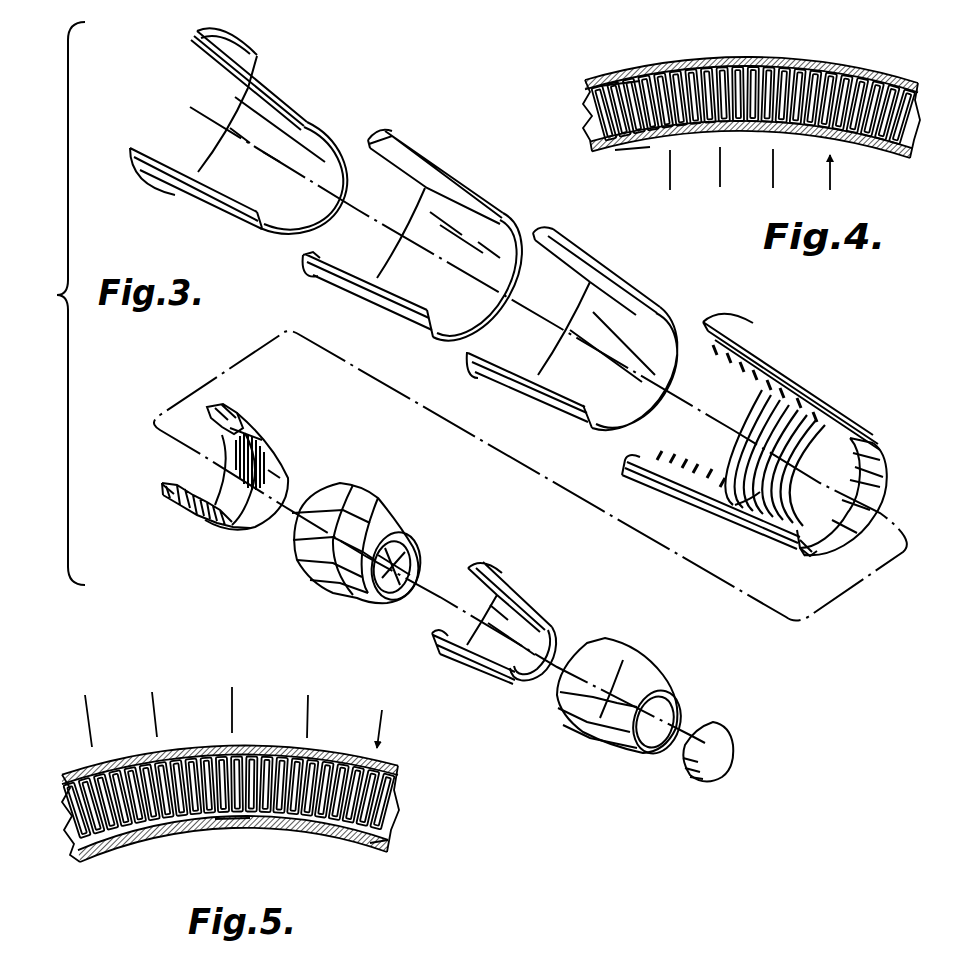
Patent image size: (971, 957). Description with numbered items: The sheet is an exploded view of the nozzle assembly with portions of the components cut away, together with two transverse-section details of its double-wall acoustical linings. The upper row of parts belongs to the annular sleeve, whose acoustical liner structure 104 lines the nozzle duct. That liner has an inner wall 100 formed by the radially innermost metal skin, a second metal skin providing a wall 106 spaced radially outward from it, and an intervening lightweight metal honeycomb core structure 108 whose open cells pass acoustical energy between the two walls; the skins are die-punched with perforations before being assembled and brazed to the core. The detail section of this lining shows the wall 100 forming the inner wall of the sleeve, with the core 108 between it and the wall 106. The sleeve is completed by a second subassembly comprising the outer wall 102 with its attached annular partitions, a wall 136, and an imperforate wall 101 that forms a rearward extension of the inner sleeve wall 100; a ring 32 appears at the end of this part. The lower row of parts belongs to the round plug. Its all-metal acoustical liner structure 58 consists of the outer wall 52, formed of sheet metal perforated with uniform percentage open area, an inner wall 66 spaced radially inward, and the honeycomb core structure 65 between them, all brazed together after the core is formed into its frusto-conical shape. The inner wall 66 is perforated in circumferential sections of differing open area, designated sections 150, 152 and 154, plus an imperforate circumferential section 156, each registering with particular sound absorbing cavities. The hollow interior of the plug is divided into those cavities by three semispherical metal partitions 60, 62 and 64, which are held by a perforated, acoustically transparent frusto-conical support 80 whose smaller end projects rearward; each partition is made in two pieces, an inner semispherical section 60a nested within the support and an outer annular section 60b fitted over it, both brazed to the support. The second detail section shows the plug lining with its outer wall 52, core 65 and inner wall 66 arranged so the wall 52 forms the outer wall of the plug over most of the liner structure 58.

In FIG. 3, the ring 32 is at (898, 464).
In FIG. 3, the outer wall 52 is at (594, 733).
In FIG. 5, the outer wall 52 is at (330, 758).
In FIG. 3, the acoustical liner structure 58 is at (723, 740).
In FIG. 5, the acoustical liner structure 58 is at (227, 791).
In FIG. 3, the partition 60 is at (224, 460).
In FIG. 3, the inner section 60a is at (223, 487).
In FIG. 3, the outer section 60b is at (240, 418).
In FIG. 3, the partition 62 is at (262, 460).
In FIG. 3, the partition 64 is at (277, 480).
In FIG. 3, the core structure 65 is at (460, 651).
In FIG. 5, the core structure 65 is at (390, 823).
In FIG. 3, the inner wall 66 is at (381, 530).
In FIG. 5, the inner wall 66 is at (232, 828).
In FIG. 3, the frusto-conical support 80 is at (182, 498).
In FIG. 3, the inner wall 100 is at (297, 101).
In FIG. 4, the inner wall 100 is at (637, 143).
In FIG. 3, the imperforate wall 101 is at (815, 547).
In FIG. 3, the outer wall 102 is at (765, 454).
In FIG. 4, the acoustical liner structure 104 is at (726, 105).
In FIG. 3, the wall 106 is at (573, 248).
In FIG. 4, the wall 106 is at (630, 73).
In FIG. 3, the core structure 108 is at (402, 145).
In FIG. 4, the core structure 108 is at (617, 110).
In FIG. 3, the wall 136 is at (742, 503).
In FIG. 3, the section 150 is at (353, 487).
In FIG. 3, the section 152 is at (380, 522).
In FIG. 3, the section 154 is at (420, 534).
In FIG. 3, the imperforate circumferential section 156 is at (350, 594).